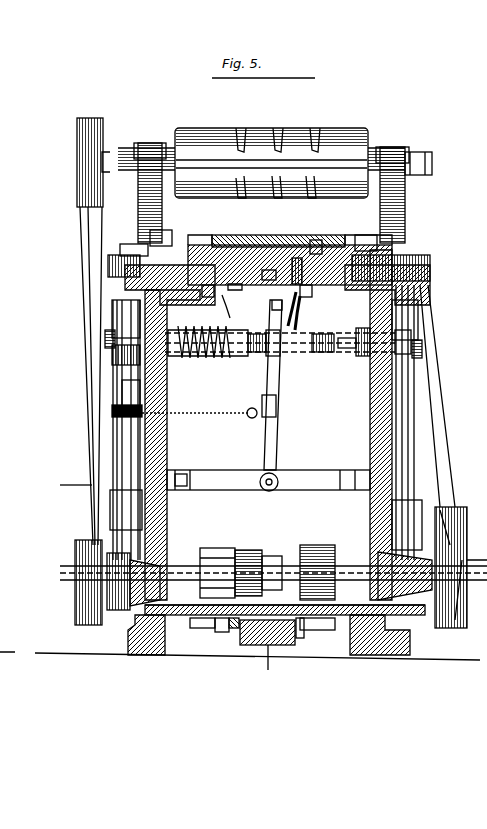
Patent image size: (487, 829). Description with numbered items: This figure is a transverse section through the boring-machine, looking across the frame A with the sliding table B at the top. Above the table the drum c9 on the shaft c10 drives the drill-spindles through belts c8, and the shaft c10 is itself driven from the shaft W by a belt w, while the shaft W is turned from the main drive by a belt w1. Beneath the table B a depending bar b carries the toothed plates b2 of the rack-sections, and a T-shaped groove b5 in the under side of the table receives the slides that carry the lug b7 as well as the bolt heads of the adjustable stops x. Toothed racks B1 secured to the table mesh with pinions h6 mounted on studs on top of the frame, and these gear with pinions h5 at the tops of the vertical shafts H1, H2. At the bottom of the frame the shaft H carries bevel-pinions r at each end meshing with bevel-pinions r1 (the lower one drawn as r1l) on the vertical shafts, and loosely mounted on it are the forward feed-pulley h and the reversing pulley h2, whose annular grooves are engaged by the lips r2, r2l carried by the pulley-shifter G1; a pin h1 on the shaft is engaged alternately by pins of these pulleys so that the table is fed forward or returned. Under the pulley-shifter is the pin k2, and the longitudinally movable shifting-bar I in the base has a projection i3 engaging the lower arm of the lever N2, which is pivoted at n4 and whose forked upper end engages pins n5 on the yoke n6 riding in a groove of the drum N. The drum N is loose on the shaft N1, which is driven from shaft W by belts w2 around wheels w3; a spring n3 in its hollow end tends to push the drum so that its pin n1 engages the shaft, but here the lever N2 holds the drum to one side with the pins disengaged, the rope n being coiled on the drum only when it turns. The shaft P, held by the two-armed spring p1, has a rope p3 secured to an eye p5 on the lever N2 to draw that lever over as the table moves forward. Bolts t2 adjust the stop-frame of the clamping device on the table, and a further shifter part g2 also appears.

The sliding table B is at (290, 254).
The toothed racks B1 is at (205, 245).
The T-shaped groove b5 is at (242, 240).
The frame A is at (125, 290).
The drum c9 is at (271, 163).
The belts c8 is at (240, 200).
The shaft c10 is at (72, 156).
The shaft W is at (75, 560).
The pinions h5 is at (108, 264).
The two-armed spring p1 is at (120, 252).
The shaft P is at (125, 258).
The pinions h6 is at (352, 255).
The bar b is at (238, 290).
The bevel-pinions r1 is at (308, 258).
The lips r2 is at (322, 244).
The stops x is at (270, 282).
The lug b7 is at (237, 291).
The toothed plate b2 is at (284, 302).
The drum N is at (275, 356).
The spring n3 is at (204, 349).
The shaft N1 is at (325, 352).
The pins n5 is at (281, 338).
The rope n is at (254, 309).
The pin n1 is at (288, 312).
The yoke n6 is at (358, 330).
The lever N2 is at (276, 444).
The pivot n4 is at (274, 476).
The wheels w3 is at (105, 340).
The belts w2 is at (112, 411).
The eye p5 is at (185, 415).
The rope p3 is at (145, 420).
The vertical shafts H1 is at (122, 452).
The belt w is at (60, 482).
The upright H2 is at (414, 418).
The belt w1 is at (453, 456).
The gear r1l is at (107, 560).
The bevel-pinions r is at (140, 600).
The shaft H is at (212, 566).
The forward feed-pulley h is at (248, 548).
The pin h1 is at (266, 563).
The pulley h2 is at (332, 526).
The pulley-shifting bar G1 is at (240, 625).
The rod r2l is at (345, 600).
The bolts t2 is at (209, 630).
The pin k2 is at (232, 630).
The piece g2 is at (310, 624).
The projection i3 is at (295, 640).
The shifting-bar I is at (268, 660).